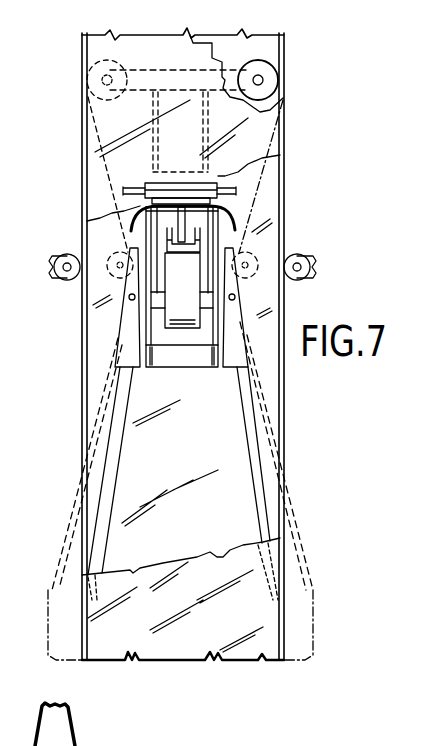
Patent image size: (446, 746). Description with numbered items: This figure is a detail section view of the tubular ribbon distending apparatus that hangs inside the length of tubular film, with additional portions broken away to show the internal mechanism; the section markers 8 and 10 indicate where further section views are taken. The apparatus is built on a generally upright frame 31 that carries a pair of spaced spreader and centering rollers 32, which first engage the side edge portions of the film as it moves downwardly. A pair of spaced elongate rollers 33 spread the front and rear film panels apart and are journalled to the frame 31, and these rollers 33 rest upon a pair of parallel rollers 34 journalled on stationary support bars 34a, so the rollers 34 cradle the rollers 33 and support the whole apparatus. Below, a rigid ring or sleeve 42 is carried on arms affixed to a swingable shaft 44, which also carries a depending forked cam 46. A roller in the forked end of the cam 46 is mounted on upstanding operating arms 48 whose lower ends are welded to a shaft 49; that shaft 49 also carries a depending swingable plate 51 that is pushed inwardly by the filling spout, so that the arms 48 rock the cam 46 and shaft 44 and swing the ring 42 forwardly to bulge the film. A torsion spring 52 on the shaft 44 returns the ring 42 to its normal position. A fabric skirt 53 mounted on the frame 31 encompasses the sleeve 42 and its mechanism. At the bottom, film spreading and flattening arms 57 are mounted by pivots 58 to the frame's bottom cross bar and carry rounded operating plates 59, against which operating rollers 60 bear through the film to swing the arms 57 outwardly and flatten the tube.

The section line 8- 8 is at (183, 8).
The section line 10- 10 is at (80, 177).
The upright frame 31 is at (188, 68).
The spreader and centering rollers 32 is at (96, 68).
The elongate rollers 33 is at (164, 166).
The rollers 34 is at (147, 182).
The stationary support bars 34a is at (123, 187).
The rigid ring or sleeve 42 is at (174, 358).
The shaft 44 is at (150, 231).
The forked cam 46 is at (231, 229).
The operating arms 48 is at (183, 253).
The shaft 49 is at (163, 263).
The swingable plate 51 is at (190, 297).
The torsion spring 52 is at (204, 212).
The fabric skirt 53 is at (229, 222).
The film spreading and flattening arms 57 is at (252, 443).
The pivots 58 is at (236, 297).
The film-guiding and operating plates 59 is at (127, 328).
The operating rollers 60 is at (303, 280).